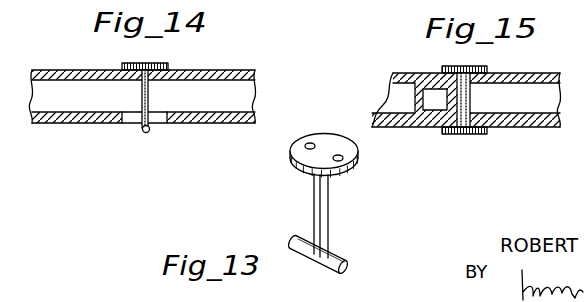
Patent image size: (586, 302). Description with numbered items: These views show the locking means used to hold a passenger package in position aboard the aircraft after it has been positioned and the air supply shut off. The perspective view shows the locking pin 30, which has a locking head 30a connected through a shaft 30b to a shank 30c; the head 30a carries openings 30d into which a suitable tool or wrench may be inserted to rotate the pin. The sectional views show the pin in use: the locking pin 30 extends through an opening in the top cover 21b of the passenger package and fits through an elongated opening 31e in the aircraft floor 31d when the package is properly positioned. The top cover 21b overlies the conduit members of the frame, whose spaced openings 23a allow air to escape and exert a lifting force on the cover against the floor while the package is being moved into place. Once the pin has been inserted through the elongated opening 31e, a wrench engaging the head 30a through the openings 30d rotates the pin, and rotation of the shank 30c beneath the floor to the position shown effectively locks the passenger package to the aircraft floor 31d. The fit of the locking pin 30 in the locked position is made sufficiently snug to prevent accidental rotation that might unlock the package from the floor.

In FIG. 14, the top cover 21b is at (146, 98).
In FIG. 15, the top cover 21b is at (518, 105).
In FIG. 15, the spaced openings 23a is at (420, 108).
In FIG. 13, the locking pin 30 is at (333, 190).
In FIG. 14, the locking head 30a is at (144, 63).
In FIG. 15, the locking head 30a is at (456, 67).
In FIG. 13, the locking head 30a is at (344, 141).
In FIG. 14, the shaft 30b is at (148, 105).
In FIG. 15, the shaft 30b is at (470, 109).
In FIG. 13, the shaft 30b is at (314, 207).
In FIG. 14, the shank 30c is at (146, 133).
In FIG. 15, the shank 30c is at (447, 135).
In FIG. 13, the shank 30c is at (346, 272).
In FIG. 13, the openings 30d is at (338, 155).
In FIG. 14, the aircraft floor 31d is at (82, 124).
In FIG. 15, the aircraft floor 31d is at (516, 128).
In FIG. 14, the elongated opening 31e is at (164, 120).